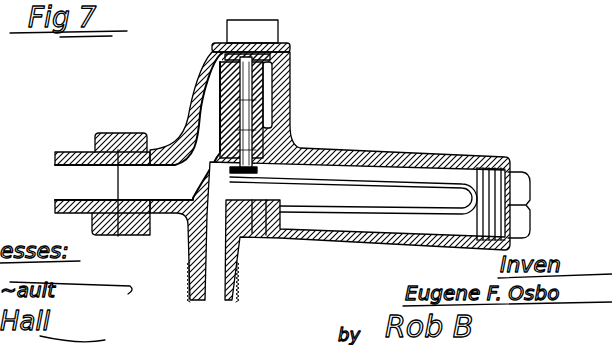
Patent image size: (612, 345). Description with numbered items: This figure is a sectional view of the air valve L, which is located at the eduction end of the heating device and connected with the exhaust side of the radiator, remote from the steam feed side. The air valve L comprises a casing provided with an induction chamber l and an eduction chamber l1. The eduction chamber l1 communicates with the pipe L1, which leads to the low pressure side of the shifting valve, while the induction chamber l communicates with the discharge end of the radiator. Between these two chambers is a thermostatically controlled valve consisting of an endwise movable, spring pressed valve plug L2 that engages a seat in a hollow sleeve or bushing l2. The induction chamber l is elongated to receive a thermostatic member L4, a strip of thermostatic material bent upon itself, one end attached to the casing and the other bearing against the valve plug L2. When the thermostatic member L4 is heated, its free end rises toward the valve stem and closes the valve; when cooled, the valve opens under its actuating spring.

The air valve L is at (322, 63).
The pipe L1 is at (70, 172).
The valve plug L2 is at (262, 102).
The thermostatic member L4 is at (428, 188).
The induction chamber l is at (290, 168).
The eduction chamber l1 is at (203, 136).
The hollow sleeve or bushing l2 is at (288, 121).